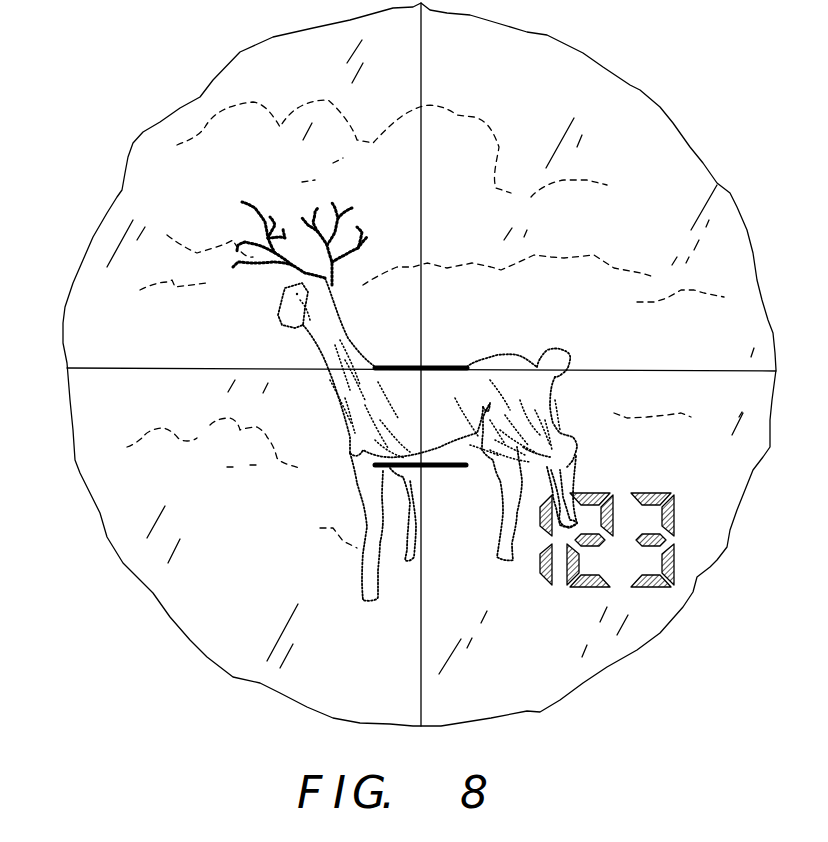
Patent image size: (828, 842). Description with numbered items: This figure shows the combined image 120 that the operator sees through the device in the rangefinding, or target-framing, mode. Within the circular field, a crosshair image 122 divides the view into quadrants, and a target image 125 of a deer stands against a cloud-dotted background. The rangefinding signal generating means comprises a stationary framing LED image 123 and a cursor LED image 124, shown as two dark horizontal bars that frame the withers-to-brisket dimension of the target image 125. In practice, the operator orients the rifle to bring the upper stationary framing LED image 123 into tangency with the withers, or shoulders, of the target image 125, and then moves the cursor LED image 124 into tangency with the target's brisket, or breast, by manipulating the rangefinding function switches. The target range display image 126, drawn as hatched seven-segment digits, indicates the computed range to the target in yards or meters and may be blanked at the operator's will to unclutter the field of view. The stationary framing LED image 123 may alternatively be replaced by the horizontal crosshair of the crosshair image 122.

The combined image 120 is at (600, 63).
The crosshair image 122 is at (424, 147).
The stationary framing LED image 123 is at (445, 366).
The cursor LED image 124 is at (448, 468).
The target image 125 is at (280, 310).
The target range display image 126 is at (643, 463).